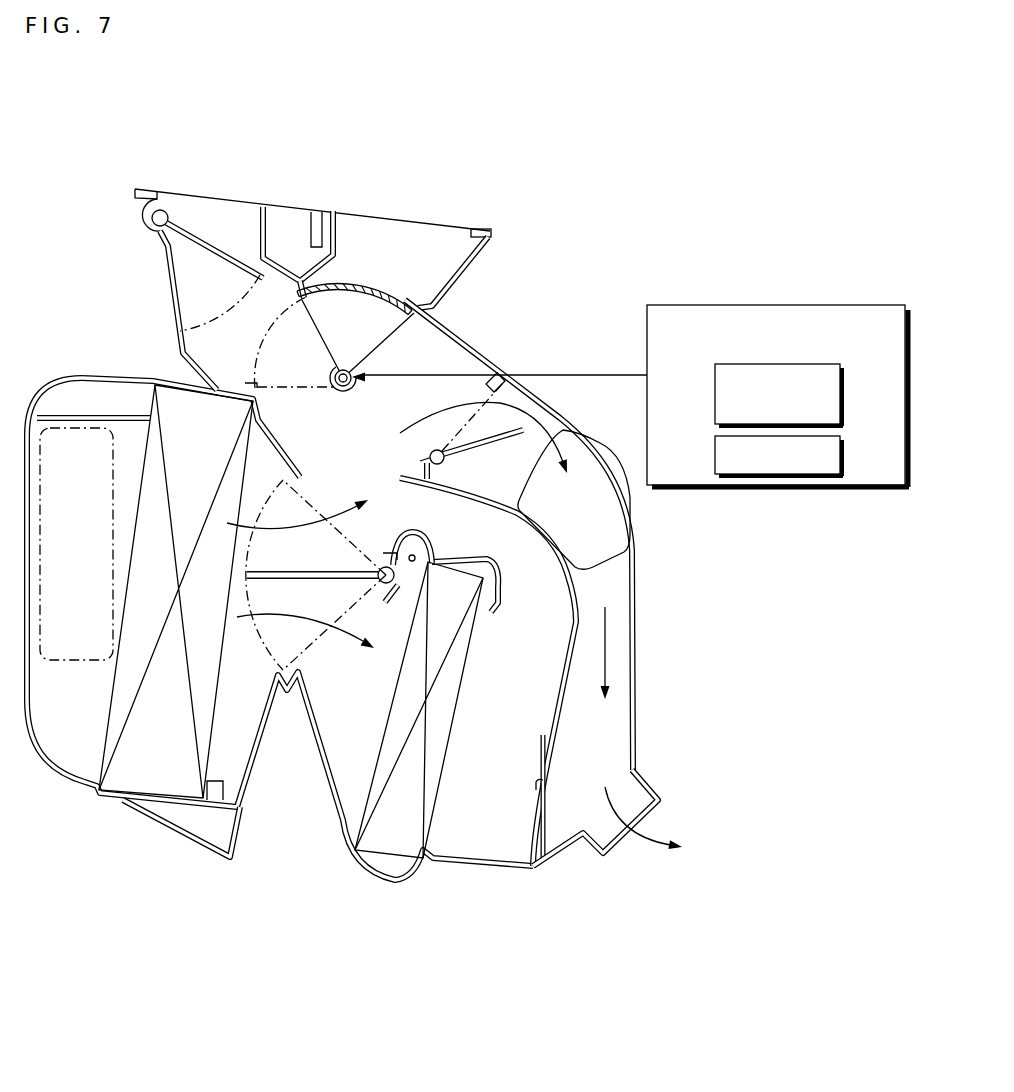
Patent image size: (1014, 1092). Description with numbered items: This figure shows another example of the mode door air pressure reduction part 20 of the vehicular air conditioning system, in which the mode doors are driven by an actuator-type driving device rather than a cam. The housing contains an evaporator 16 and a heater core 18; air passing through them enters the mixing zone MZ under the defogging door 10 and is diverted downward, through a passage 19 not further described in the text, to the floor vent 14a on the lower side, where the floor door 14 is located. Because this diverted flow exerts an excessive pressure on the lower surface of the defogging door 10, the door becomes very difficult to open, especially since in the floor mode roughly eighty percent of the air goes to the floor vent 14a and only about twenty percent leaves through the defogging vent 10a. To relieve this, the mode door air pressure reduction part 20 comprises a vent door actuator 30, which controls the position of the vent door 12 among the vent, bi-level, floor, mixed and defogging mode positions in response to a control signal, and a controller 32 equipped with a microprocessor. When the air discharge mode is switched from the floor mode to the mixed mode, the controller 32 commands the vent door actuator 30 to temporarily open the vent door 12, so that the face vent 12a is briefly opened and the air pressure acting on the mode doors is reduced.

The defogging door 10 is at (222, 257).
The defogging vent 10a is at (203, 207).
The vent door 12 is at (353, 287).
The face vent 12a is at (433, 230).
The floor door 14 is at (510, 410).
The floor vent 14a is at (637, 801).
The evaporator 16 is at (155, 760).
The heater core 18 is at (432, 758).
The air passage 19 is at (634, 575).
The mode door air pressure reduction part 20 is at (783, 305).
The vent door actuator 30 is at (840, 395).
The controller 32 is at (843, 457).
The mixing zone MZ is at (352, 498).